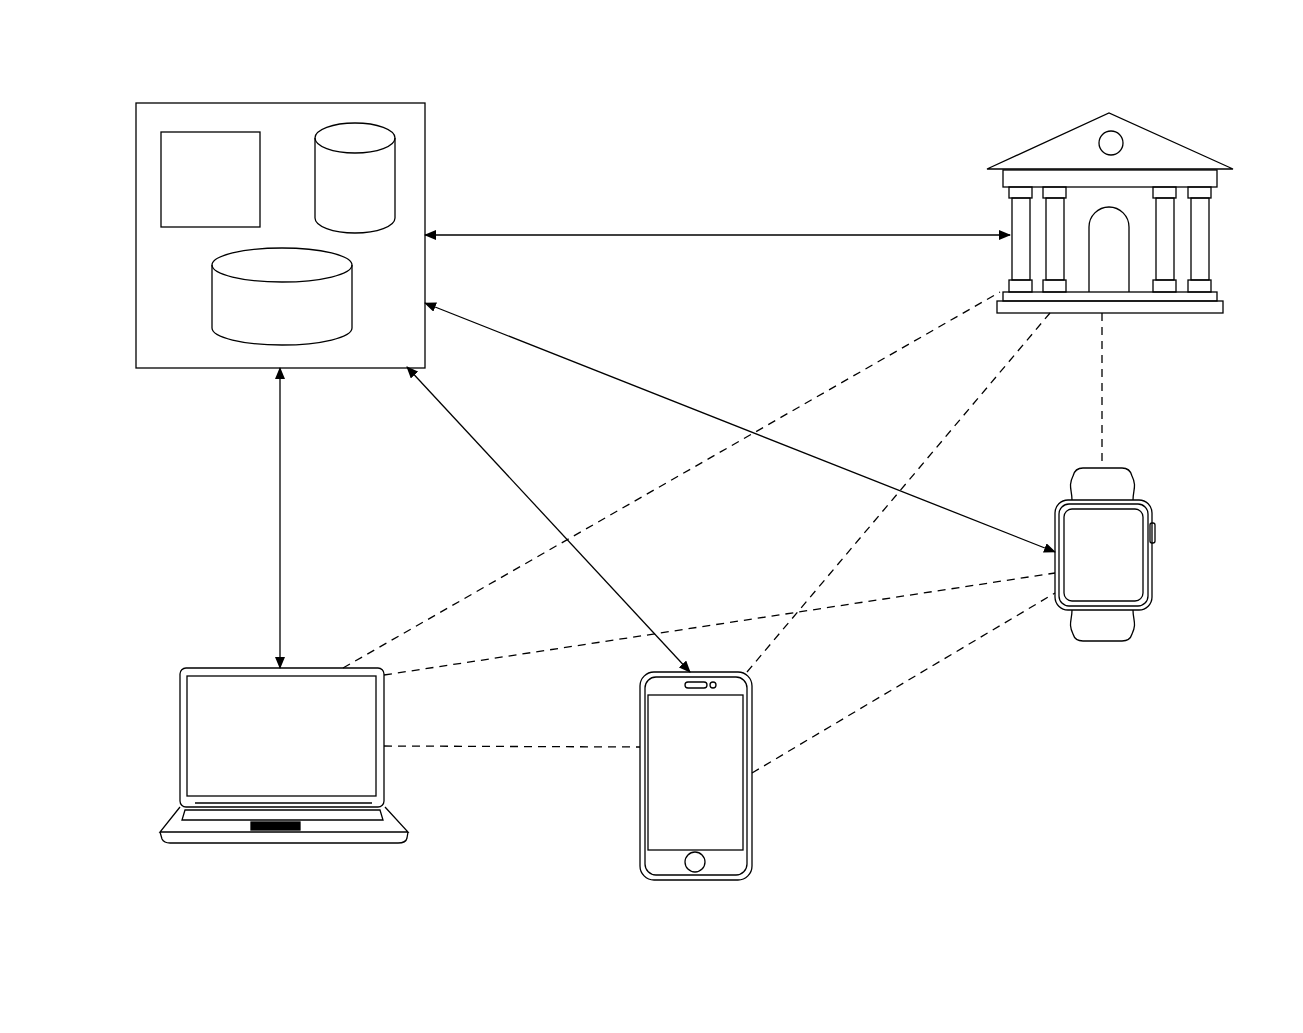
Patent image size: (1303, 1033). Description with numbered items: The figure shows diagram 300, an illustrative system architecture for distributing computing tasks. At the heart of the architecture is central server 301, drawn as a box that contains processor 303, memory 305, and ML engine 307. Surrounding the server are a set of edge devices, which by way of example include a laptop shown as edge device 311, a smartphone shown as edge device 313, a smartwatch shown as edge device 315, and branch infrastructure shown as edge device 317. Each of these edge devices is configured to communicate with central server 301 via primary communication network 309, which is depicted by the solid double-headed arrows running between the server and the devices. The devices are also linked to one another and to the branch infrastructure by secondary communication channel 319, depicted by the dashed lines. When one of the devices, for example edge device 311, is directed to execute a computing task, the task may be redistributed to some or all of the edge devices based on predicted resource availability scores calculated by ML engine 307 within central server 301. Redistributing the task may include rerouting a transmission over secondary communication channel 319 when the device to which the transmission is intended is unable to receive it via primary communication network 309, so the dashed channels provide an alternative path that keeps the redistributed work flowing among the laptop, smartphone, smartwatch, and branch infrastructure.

The diagram 300 is at (134, 64).
The central server 301 is at (287, 103).
The processor 303 is at (161, 179).
The memory 305 is at (360, 233).
The ML engine 307 is at (212, 312).
The primary communication network 309 is at (715, 233).
The edge device 311 is at (180, 742).
The edge device 313 is at (752, 835).
The edge device 315 is at (1152, 556).
The edge device 317 is at (1208, 235).
The secondary communication channel 319 is at (843, 383).